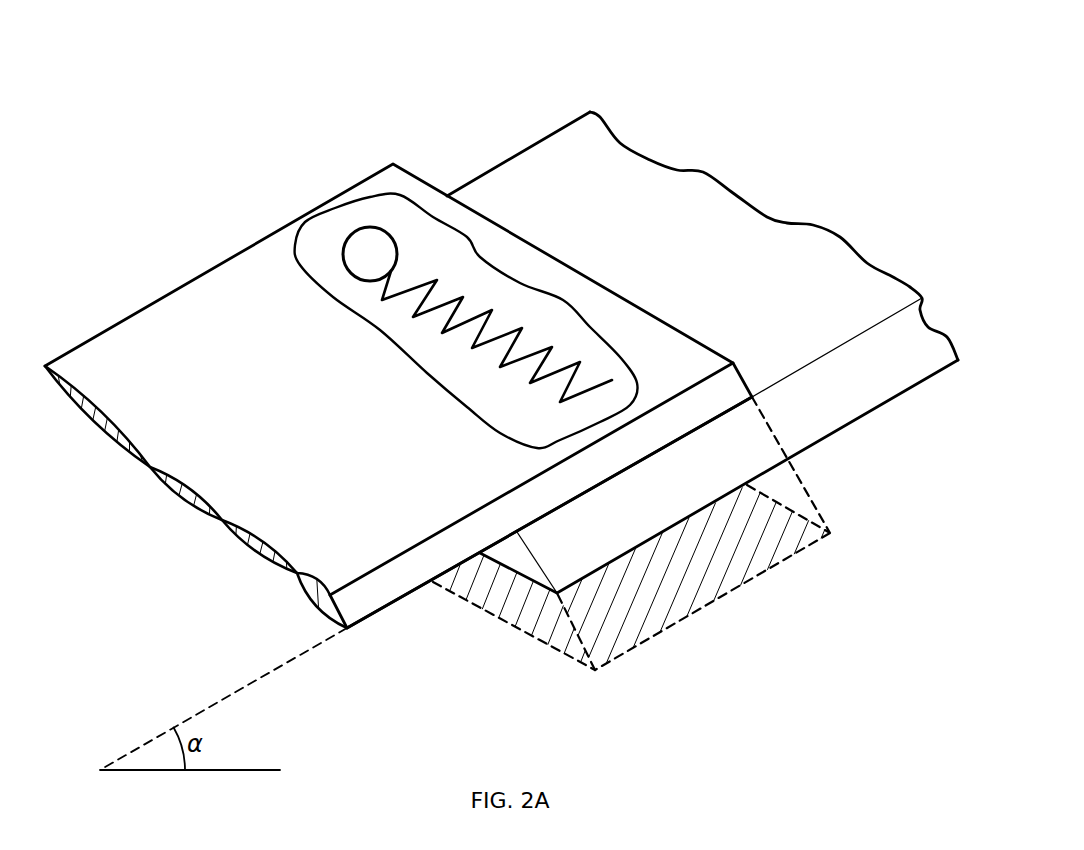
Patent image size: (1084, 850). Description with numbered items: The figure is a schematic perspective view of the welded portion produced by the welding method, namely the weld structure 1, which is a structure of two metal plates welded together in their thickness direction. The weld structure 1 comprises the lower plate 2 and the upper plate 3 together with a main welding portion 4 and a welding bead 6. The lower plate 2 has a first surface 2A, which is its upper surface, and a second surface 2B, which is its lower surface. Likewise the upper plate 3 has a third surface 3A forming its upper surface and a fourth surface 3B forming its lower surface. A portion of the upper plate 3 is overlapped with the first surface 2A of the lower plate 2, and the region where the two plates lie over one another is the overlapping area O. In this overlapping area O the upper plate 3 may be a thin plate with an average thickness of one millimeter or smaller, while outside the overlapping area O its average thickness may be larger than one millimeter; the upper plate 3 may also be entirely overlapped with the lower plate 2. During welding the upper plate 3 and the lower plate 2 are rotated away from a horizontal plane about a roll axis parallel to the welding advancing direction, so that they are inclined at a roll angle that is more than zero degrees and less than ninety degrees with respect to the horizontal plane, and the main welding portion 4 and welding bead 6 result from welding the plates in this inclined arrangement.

The weld structure 1 is at (415, 113).
The lower plate 2 is at (930, 358).
The first surface 2A is at (682, 200).
The second surface 2B is at (852, 420).
The upper plate 3 is at (368, 600).
The third surface 3A is at (165, 338).
The fourth surface 3B is at (418, 588).
The main welding portion 4 is at (410, 285).
The welding bead 6 is at (328, 273).
The overlapping area O is at (550, 630).